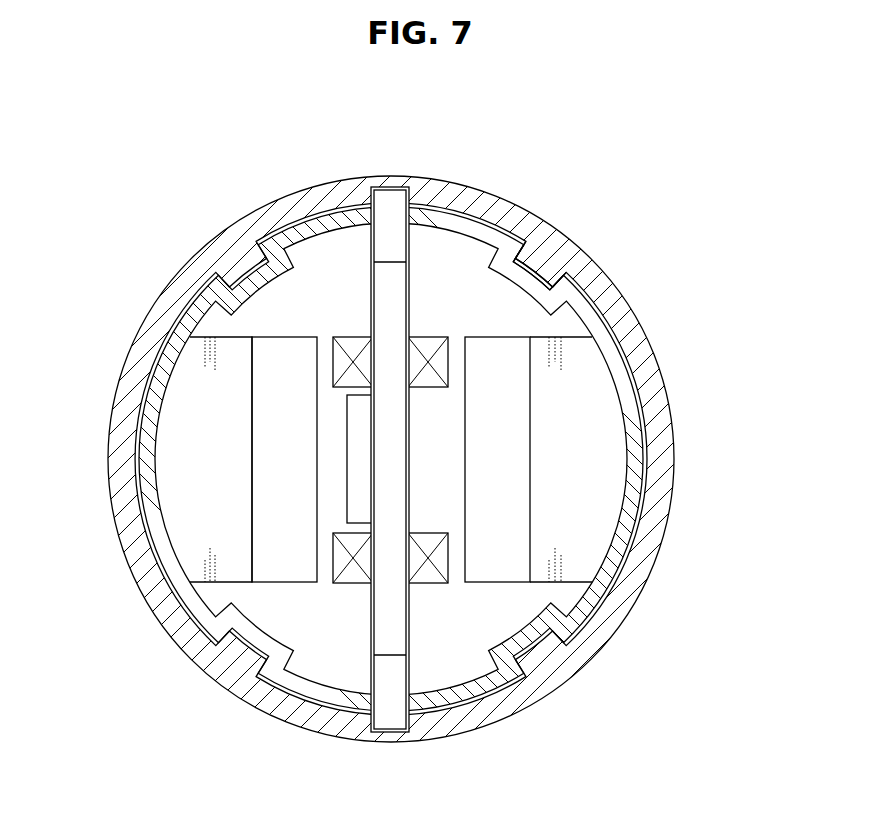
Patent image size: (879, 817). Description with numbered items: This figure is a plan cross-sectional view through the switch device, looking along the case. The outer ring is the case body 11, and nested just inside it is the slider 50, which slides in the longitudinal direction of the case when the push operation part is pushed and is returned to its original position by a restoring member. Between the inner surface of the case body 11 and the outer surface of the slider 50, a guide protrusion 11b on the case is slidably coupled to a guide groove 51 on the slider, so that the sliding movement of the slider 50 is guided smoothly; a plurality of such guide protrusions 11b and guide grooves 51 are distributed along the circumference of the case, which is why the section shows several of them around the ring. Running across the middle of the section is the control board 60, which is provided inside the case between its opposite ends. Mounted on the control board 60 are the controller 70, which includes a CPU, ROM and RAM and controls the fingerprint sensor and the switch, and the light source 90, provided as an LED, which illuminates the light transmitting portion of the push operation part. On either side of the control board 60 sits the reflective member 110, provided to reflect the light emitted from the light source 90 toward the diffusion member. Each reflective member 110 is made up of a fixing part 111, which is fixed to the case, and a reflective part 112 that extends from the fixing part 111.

The case body 11 is at (675, 450).
The guide protrusion 11b is at (530, 273).
The slider 50 is at (655, 378).
The guide groove 51 is at (538, 267).
The control board 60 is at (410, 278).
The controller 70 is at (360, 445).
The light source 90 is at (428, 342).
The reflective member 110 is at (499, 466).
The fixing part 111 is at (592, 512).
The reflective part 112 is at (510, 560).